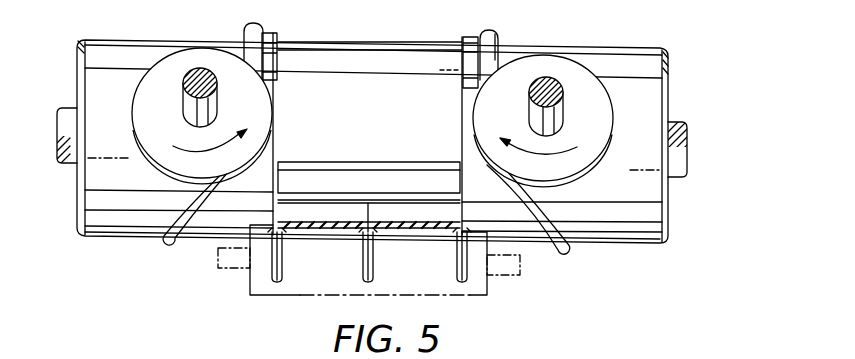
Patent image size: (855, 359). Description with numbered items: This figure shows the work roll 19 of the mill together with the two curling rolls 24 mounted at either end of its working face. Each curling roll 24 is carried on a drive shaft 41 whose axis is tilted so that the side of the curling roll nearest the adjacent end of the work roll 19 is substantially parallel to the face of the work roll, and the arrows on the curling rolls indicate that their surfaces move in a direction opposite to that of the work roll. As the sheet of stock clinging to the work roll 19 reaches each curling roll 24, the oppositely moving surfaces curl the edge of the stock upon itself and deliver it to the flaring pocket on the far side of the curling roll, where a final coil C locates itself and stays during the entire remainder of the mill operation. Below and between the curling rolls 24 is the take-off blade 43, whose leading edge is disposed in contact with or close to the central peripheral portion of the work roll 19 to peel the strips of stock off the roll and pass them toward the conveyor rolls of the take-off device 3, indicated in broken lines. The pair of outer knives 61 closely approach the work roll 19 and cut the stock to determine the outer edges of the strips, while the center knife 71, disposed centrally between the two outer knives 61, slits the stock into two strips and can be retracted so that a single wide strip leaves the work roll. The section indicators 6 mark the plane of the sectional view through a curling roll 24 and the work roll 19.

The take-off device 3 is at (453, 307).
The section line for FIGURE 6 is at (42, 7).
The work roll 19 is at (117, 220).
The curling roll 24 is at (150, 96).
The drive shaft 41 is at (214, 100).
The take-off blade 43 is at (435, 180).
The outer knife 61 is at (270, 266).
The center knife 71 is at (377, 266).
The final coil C is at (265, 32).